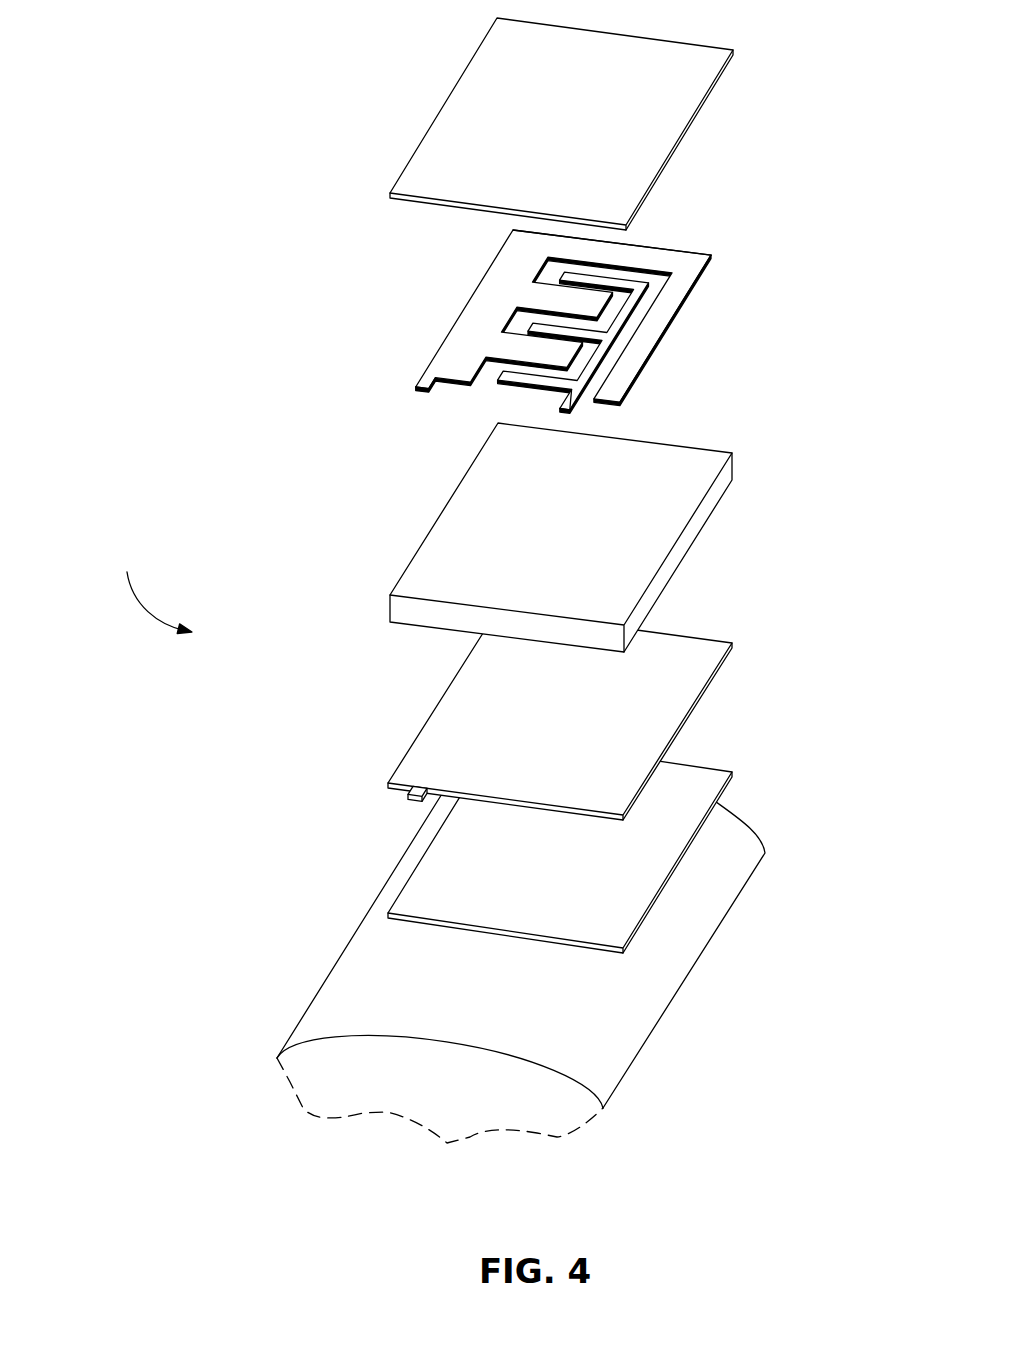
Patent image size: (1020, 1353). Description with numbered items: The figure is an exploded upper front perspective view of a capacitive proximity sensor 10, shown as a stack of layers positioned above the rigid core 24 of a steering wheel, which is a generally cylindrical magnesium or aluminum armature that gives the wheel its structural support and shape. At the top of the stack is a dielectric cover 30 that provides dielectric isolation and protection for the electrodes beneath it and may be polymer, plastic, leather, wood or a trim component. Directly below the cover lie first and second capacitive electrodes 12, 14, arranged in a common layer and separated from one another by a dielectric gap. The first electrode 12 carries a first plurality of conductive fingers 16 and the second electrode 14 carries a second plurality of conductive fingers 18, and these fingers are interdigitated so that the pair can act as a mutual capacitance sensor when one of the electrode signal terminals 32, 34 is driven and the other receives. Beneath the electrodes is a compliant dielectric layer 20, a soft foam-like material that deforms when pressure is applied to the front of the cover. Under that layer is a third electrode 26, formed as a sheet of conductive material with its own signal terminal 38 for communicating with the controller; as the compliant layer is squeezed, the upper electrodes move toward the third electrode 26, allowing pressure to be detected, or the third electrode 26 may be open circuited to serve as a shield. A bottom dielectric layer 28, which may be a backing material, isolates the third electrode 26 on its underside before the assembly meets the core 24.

The capacitive proximity sensor 10 is at (144, 586).
The first capacitive electrode 12 is at (547, 334).
The second capacitive electrode 14 is at (648, 296).
The first plurality of conductive fingers 16 is at (640, 250).
The second plurality of conductive fingers 18 is at (608, 294).
The compliant dielectric layer 20 is at (415, 585).
The rigid core 24 is at (330, 1010).
The third electrode 26 is at (527, 726).
The bottom dielectric layer 28 is at (418, 905).
The dielectric cover 30 is at (415, 182).
The electrode signal terminal 32 is at (415, 390).
The electrode signal terminal 34 is at (562, 420).
The signal terminal 38 is at (415, 799).